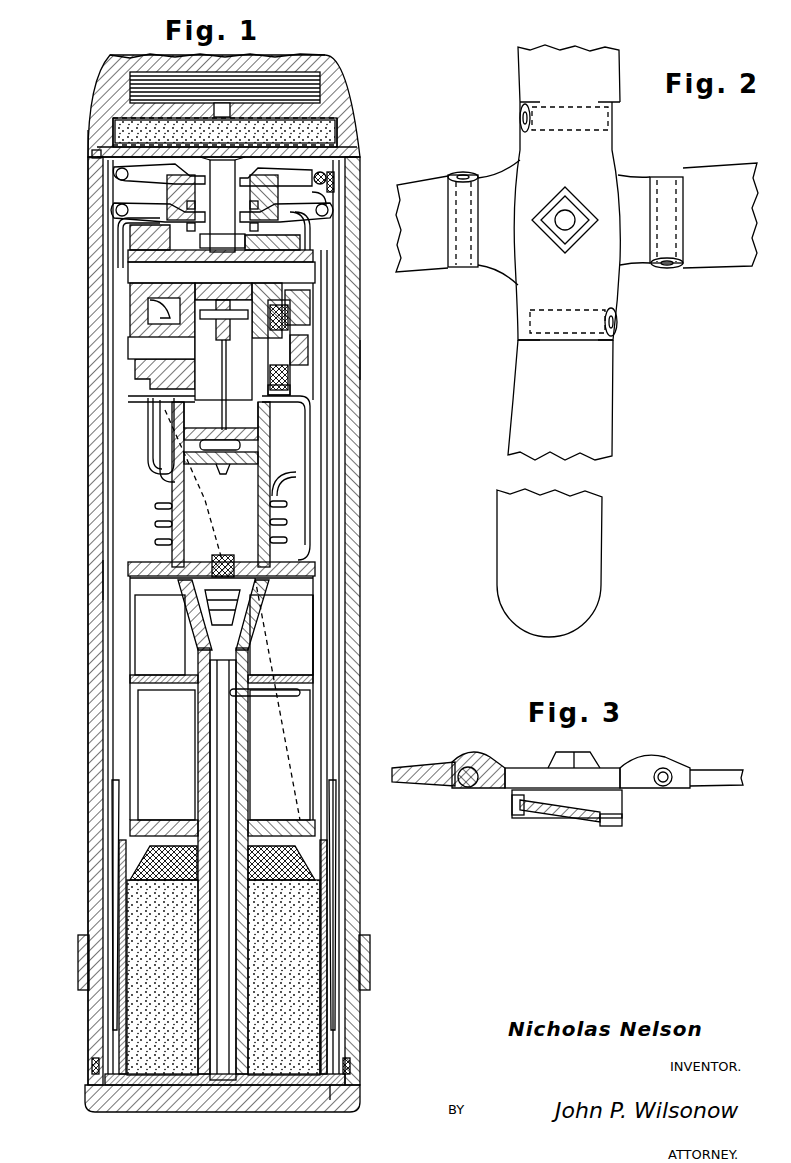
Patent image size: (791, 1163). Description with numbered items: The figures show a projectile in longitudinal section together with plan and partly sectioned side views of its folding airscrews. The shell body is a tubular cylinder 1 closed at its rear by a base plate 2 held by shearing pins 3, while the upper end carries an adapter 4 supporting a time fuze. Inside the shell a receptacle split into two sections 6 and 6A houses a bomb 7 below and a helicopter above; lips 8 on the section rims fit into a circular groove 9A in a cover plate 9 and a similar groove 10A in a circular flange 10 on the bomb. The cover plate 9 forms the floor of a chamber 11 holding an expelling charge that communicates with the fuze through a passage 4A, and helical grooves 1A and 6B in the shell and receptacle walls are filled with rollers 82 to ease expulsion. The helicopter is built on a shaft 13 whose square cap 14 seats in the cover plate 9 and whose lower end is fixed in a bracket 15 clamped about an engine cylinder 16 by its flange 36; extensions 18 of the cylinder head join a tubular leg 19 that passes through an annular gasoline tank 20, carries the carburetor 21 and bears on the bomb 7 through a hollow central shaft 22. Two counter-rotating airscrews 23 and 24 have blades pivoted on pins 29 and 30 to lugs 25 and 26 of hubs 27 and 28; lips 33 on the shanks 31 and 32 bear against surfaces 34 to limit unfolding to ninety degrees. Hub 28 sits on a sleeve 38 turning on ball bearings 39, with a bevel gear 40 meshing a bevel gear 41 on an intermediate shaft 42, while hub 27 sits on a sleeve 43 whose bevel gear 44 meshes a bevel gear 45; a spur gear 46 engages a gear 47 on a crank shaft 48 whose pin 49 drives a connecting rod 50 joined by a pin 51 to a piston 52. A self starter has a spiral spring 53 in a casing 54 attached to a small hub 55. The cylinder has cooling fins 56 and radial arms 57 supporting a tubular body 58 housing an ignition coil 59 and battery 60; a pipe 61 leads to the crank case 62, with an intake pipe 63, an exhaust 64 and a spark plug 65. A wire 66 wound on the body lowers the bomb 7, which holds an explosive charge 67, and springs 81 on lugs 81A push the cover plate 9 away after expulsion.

In FIG. 1, the tubular cylinder 1 is at (352, 360).
In FIG. 1, the groove 1A is at (205, 512).
In FIG. 1, the base plate 2 is at (212, 1108).
In FIG. 1, the shearing pins 3 is at (348, 1083).
In FIG. 1, the adapter 4 is at (348, 99).
In FIG. 1, the passage 4A is at (225, 108).
In FIG. 1, the receptacle section 6 is at (76, 803).
In FIG. 1, the receptacle section 6A is at (100, 560).
In FIG. 1, the groove 6B is at (92, 1066).
In FIG. 1, the bomb 7 is at (322, 1056).
In FIG. 1, the lips 8 is at (345, 143).
In FIG. 1, the cover plate 9 is at (90, 135).
In FIG. 1, the circular groove 9A is at (92, 152).
In FIG. 1, the circular flange 10 is at (325, 1080).
In FIG. 1, the groove 10A is at (338, 1098).
In FIG. 1, the chamber 11 is at (343, 121).
In FIG. 1, the shaft 13 is at (255, 172).
In FIG. 2, the shaft 13 is at (563, 230).
In FIG. 1, the cap 14 is at (225, 132).
In FIG. 2, the cap 14 is at (576, 201).
In FIG. 3, the cap 14 is at (591, 753).
In FIG. 1, the bracket 15 is at (146, 316).
In FIG. 1, the cylinder 16 is at (266, 439).
In FIG. 1, the extensions 18 is at (262, 618).
In FIG. 1, the tubular leg 19 is at (247, 754).
In FIG. 1, the gasoline tank 20 is at (298, 719).
In FIG. 1, the carburetor 21 is at (215, 711).
In FIG. 1, the hollow central shaft 22 is at (216, 992).
In FIG. 1, the airscrew 23 is at (336, 322).
In FIG. 2, the airscrew 23 is at (418, 174).
In FIG. 3, the airscrew 23 is at (550, 822).
In FIG. 2, the airscrew 24 is at (521, 85).
In FIG. 3, the airscrew 24 is at (420, 768).
In FIG. 1, the lug 25 is at (148, 212).
In FIG. 2, the lug 25 is at (640, 176).
In FIG. 1, the lug 26 is at (150, 187).
In FIG. 2, the lug 26 is at (611, 152).
In FIG. 3, the lug 26 is at (626, 770).
In FIG. 1, the hub 27 is at (325, 196).
In FIG. 3, the hub 27 is at (622, 816).
In FIG. 1, the hub 28 is at (190, 176).
In FIG. 2, the hub 28 is at (623, 216).
In FIG. 3, the hub 28 is at (522, 768).
In FIG. 1, the pivot pin 29 is at (116, 210).
In FIG. 2, the pivot pin 29 is at (664, 267).
In FIG. 3, the pivot pin 29 is at (612, 818).
In FIG. 1, the pivot pin 30 is at (116, 174).
In FIG. 2, the pivot pin 30 is at (616, 320).
In FIG. 3, the pivot pin 30 is at (666, 786).
In FIG. 2, the blade shank 31 is at (667, 225).
In FIG. 3, the blade shank 31 is at (580, 826).
In FIG. 2, the blade shank 32 is at (566, 313).
In FIG. 3, the blade shank 32 is at (664, 762).
In FIG. 2, the lips 33 is at (567, 129).
In FIG. 3, the lips 33 is at (476, 758).
In FIG. 3, the surfaces 34 is at (484, 756).
In FIG. 1, the flange 36 is at (170, 416).
In FIG. 1, the sleeve 38 is at (222, 204).
In FIG. 1, the ball bearings 39 is at (222, 211).
In FIG. 1, the bevel gear 40 is at (312, 242).
In FIG. 1, the bevel gear 41 is at (175, 254).
In FIG. 1, the intermediate shaft 42 is at (318, 271).
In FIG. 1, the sleeve 43 is at (330, 212).
In FIG. 1, the bevel gear 44 is at (132, 236).
In FIG. 1, the bevel gear 45 is at (302, 302).
In FIG. 1, the spur gear 46 is at (132, 289).
In FIG. 1, the gear 47 is at (130, 332).
In FIG. 1, the crank shaft 48 is at (128, 349).
In FIG. 1, the pin 49 is at (240, 306).
In FIG. 1, the connecting rod 50 is at (222, 404).
In FIG. 1, the pin 51 is at (246, 447).
In FIG. 1, the piston 52 is at (223, 470).
In FIG. 1, the spiral spring 53 is at (291, 381).
In FIG. 1, the casing 54 is at (296, 398).
In FIG. 1, the small hub 55 is at (271, 339).
In FIG. 1, the cooling fins 56 is at (165, 508).
In FIG. 1, the radial arms 57 is at (165, 563).
In FIG. 1, the tubular body 58 is at (138, 634).
In FIG. 1, the ignition coil 59 is at (155, 678).
In FIG. 1, the battery 60 is at (311, 638).
In FIG. 1, the pipe 61 is at (307, 531).
In FIG. 1, the crank case 62 is at (176, 397).
In FIG. 1, the intake pipe 63 is at (158, 470).
In FIG. 1, the exhaust 64 is at (282, 499).
In FIG. 1, the spark plug 65 is at (230, 620).
In FIG. 1, the wire 66 is at (296, 869).
In FIG. 1, the charge 67 is at (312, 926).
In FIG. 1, the springs 81 is at (335, 166).
In FIG. 1, the lugs 81A is at (332, 182).
In FIG. 2, the lugs 81A is at (403, 173).
In FIG. 1, the rollers 82 is at (348, 1063).